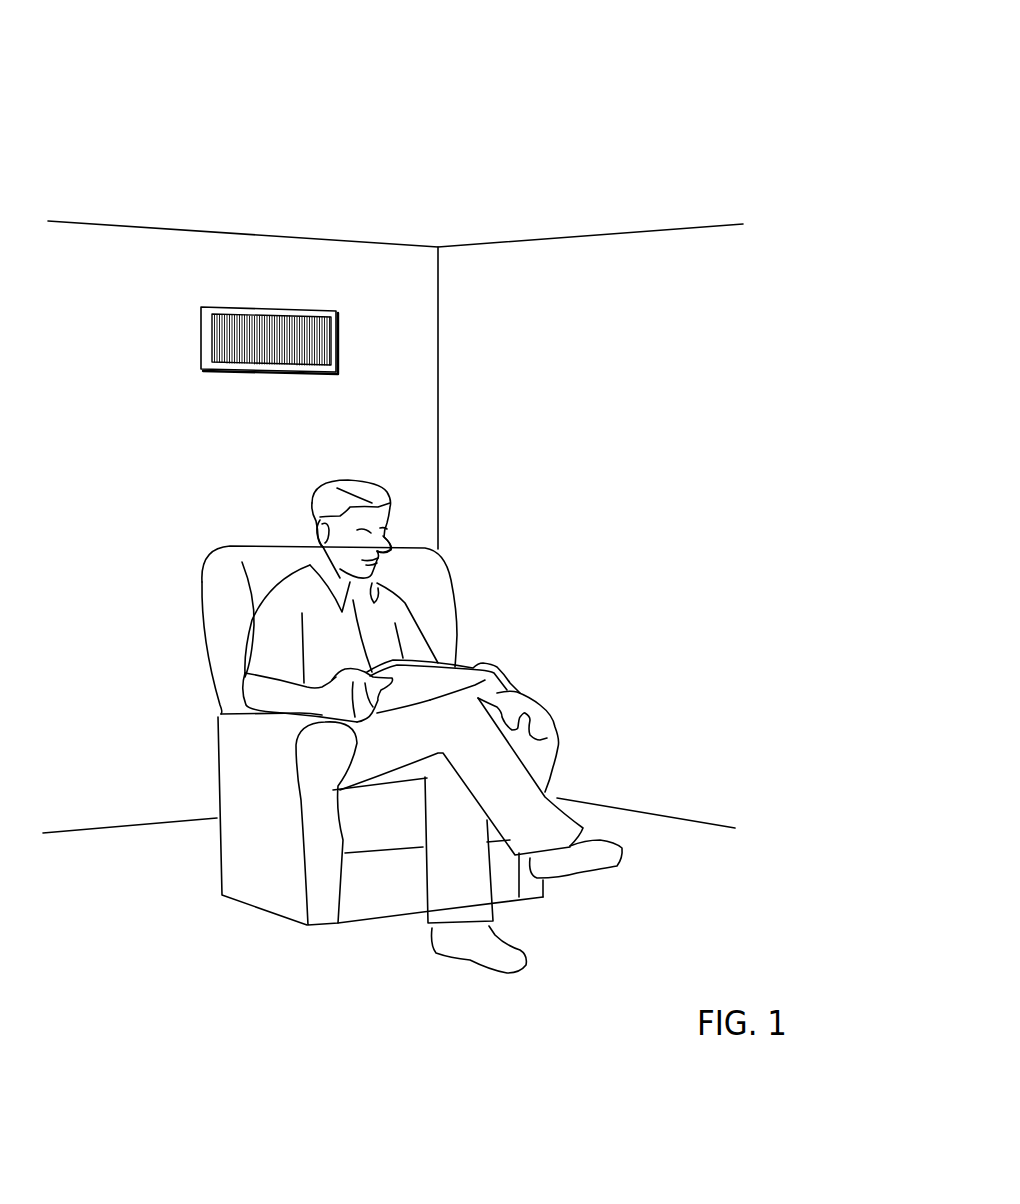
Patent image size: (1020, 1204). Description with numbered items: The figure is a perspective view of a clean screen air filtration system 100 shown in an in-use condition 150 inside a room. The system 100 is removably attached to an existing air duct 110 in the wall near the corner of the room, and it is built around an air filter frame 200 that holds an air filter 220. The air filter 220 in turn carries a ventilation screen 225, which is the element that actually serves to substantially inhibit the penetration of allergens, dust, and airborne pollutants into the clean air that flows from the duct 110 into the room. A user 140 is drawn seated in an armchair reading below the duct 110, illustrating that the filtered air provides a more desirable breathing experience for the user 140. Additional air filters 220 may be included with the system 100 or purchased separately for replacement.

The clean screen air filtration system 100 is at (556, 68).
The in-use condition 150 is at (593, 107).
The existing air duct 110 is at (334, 319).
The user 140 is at (340, 638).
The air filter frame 200 is at (224, 375).
The air filter 220 is at (265, 363).
The ventilation screen 225 is at (210, 335).